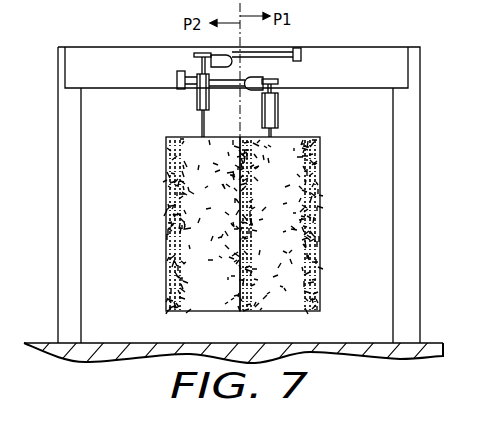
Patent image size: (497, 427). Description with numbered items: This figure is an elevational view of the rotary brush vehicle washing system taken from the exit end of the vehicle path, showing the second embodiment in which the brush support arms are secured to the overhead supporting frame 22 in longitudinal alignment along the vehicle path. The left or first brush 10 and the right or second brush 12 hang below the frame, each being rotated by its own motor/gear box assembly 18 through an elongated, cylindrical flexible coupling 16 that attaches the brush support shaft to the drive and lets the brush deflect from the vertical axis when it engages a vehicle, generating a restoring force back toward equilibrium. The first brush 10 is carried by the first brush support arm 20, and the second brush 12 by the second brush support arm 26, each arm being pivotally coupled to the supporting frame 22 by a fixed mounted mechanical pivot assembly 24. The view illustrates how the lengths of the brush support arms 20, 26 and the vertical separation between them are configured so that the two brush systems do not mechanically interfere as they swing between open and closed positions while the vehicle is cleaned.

The first brush 10 is at (166, 184).
The second brush 12 is at (345, 163).
The coupling 16 is at (195, 97).
The motor/gear box assembly 18 is at (225, 52).
The first brush support arm 20 is at (275, 47).
The supporting frame 22 is at (97, 47).
The pivot assembly 24 is at (303, 53).
The second brush support arm 26 is at (230, 88).